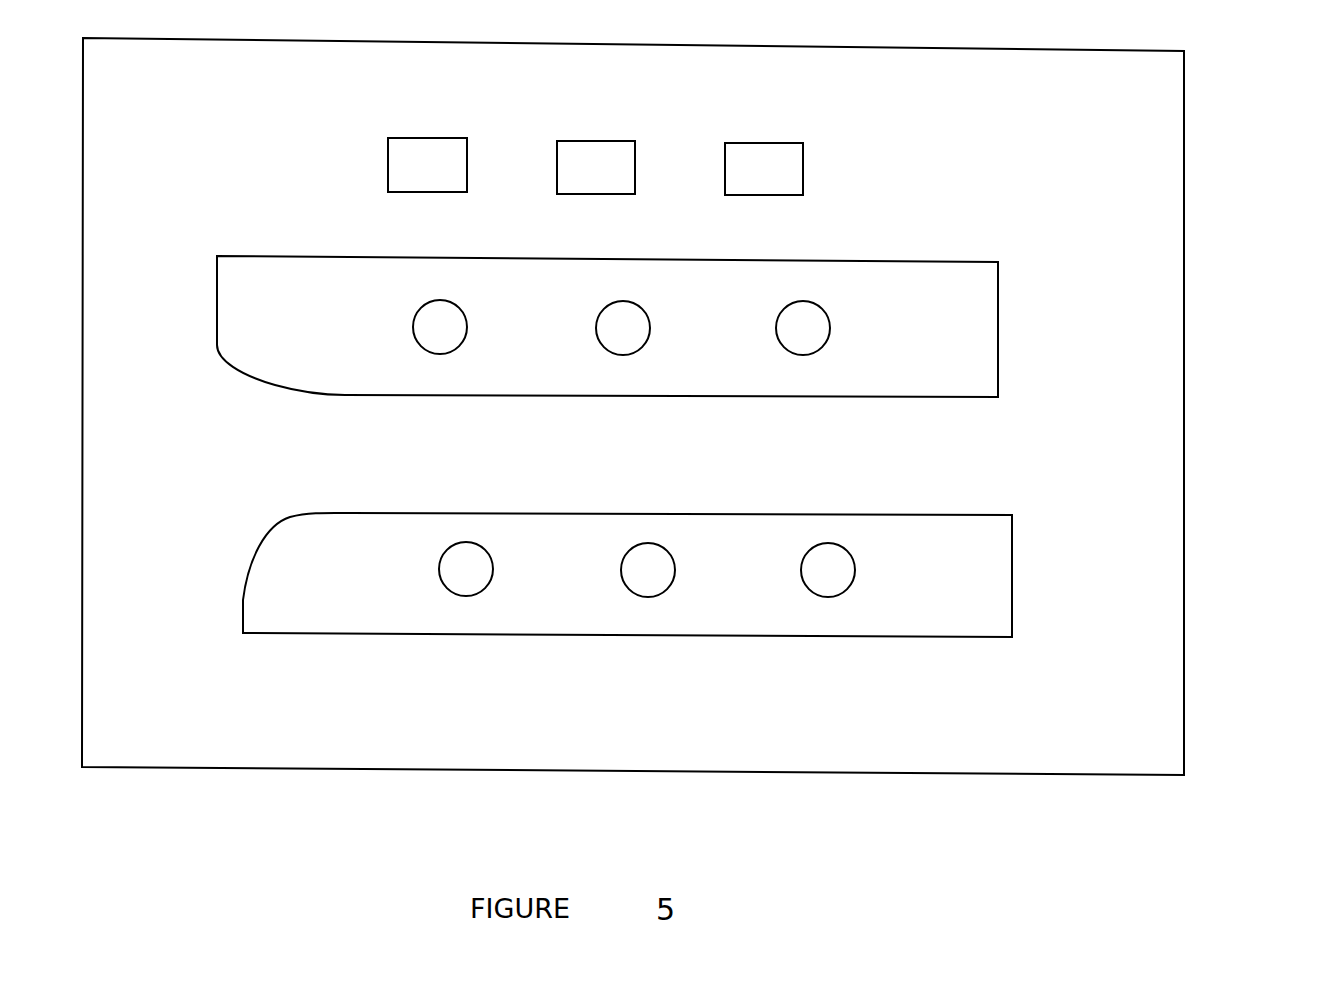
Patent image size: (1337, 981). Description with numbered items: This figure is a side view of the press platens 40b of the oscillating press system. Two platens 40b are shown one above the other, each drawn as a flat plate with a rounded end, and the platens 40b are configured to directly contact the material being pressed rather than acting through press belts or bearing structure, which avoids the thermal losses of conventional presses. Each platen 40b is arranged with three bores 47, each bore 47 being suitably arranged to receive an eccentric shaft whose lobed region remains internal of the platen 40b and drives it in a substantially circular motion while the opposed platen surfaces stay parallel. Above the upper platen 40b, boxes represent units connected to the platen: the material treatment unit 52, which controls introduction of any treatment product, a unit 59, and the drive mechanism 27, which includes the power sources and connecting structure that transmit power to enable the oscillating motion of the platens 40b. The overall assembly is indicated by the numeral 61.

The kit enclosure / package 61 is at (1204, 107).
The platens 40b is at (912, 258).
The bore 47 is at (820, 354).
The material treatment unit 52 is at (426, 260).
The component 59 is at (590, 260).
The drive mechanism 27 is at (758, 260).